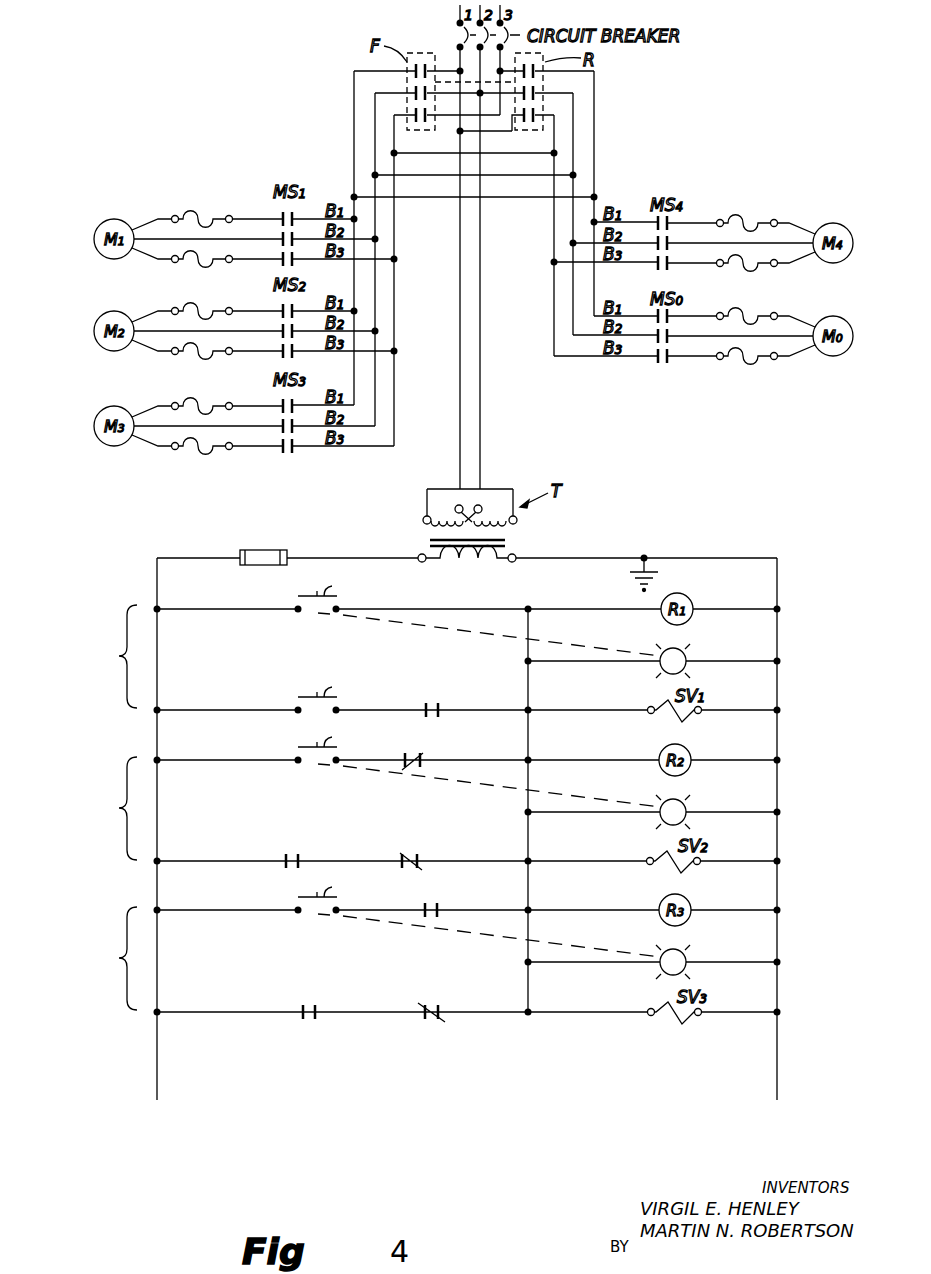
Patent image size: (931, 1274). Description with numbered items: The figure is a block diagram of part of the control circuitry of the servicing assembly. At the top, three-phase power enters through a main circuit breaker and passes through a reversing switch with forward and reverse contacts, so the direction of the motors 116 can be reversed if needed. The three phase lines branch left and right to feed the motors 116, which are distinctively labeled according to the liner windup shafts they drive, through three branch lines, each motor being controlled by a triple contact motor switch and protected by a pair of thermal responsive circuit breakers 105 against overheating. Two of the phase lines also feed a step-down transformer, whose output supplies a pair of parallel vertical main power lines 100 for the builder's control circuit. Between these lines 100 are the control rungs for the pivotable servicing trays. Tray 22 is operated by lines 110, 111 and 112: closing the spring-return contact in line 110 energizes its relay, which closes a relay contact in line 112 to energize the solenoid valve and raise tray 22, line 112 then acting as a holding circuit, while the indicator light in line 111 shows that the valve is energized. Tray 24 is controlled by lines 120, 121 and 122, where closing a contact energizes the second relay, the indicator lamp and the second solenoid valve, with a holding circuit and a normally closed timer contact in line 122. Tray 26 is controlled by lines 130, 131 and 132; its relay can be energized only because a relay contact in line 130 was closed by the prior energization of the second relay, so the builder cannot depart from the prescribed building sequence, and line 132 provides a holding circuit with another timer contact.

The motors 116 is at (474, 333).
The thermal responsive circuit breakers 105 is at (189, 307).
The main power lines 100 is at (777, 793).
The tray 22 is at (97, 656).
The tray 24 is at (96, 808).
The tray 26 is at (99, 958).
The line 110 is at (237, 605).
The line 111 is at (757, 661).
The line 112 is at (228, 707).
The line 120 is at (233, 757).
The line 121 is at (749, 812).
The line 122 is at (233, 859).
The line 130 is at (236, 908).
The line 131 is at (755, 962).
The line 132 is at (232, 1010).